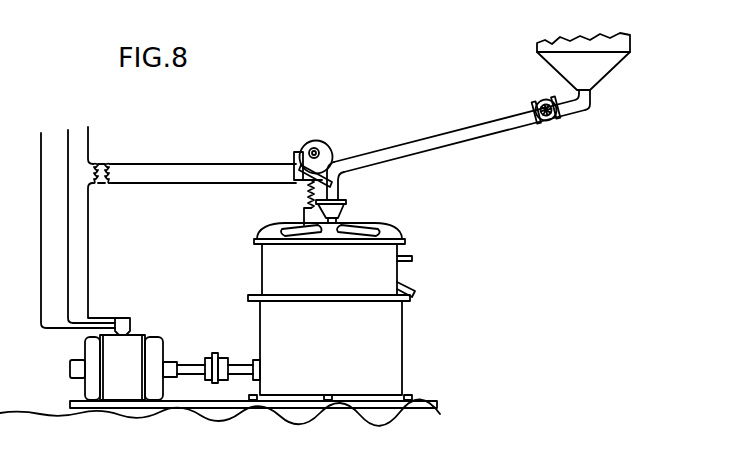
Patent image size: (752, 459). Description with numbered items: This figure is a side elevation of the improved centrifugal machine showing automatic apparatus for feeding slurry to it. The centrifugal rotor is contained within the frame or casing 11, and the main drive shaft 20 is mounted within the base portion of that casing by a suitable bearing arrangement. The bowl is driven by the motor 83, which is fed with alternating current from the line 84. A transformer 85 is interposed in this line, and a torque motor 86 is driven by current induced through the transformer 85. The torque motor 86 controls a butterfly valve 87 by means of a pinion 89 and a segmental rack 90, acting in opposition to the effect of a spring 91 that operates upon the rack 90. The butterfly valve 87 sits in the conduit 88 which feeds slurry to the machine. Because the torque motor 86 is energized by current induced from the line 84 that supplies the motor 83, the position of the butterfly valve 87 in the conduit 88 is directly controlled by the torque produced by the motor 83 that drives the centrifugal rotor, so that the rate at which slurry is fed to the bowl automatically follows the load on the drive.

The frame or casing 11 is at (402, 335).
The main drive shaft 20 is at (248, 352).
The motor 83 is at (88, 383).
The line 84 is at (88, 243).
The transformer 85 is at (194, 162).
The torque motor 86 is at (322, 143).
The butterfly valve 87 is at (340, 185).
The conduit 88 is at (463, 141).
The pinion 89 is at (330, 153).
The segmental rack 90 is at (296, 156).
The spring 91 is at (310, 197).